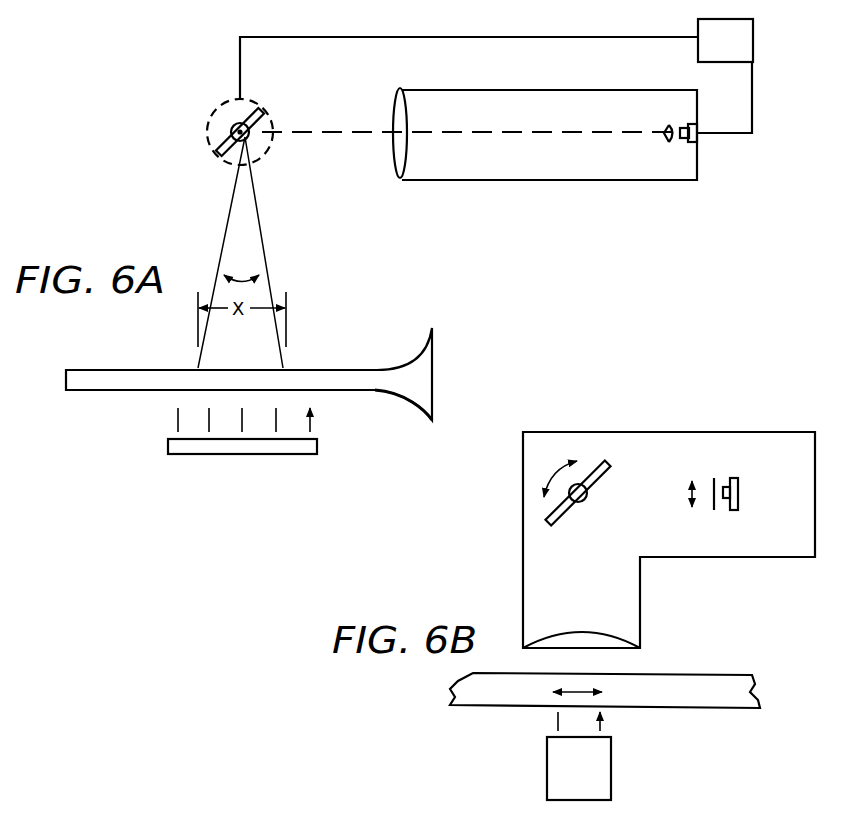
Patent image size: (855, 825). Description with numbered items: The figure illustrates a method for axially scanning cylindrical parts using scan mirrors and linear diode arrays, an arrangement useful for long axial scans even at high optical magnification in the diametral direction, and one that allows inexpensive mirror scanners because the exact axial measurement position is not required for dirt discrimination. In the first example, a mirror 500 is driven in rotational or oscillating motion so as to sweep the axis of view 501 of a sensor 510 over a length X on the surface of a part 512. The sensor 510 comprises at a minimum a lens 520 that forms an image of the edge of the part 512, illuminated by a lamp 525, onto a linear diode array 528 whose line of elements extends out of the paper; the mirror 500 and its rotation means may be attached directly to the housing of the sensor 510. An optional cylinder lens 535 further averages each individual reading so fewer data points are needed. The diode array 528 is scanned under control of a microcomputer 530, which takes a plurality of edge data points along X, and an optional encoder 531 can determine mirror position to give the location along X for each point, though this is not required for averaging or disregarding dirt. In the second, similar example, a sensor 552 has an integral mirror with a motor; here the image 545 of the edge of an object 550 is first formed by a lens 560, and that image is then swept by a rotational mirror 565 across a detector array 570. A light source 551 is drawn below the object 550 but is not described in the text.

In FIG. 6A, the mirror 500 is at (262, 109).
In FIG. 6A, the axis of view 501 is at (318, 130).
In FIG. 6A, the sensor 510 is at (518, 180).
In FIG. 6A, the part 512 is at (433, 373).
In FIG. 6A, the lens 520 is at (394, 145).
In FIG. 6A, the lamp 525 is at (318, 446).
In FIG. 6A, the linear diode array 528 is at (680, 141).
In FIG. 6A, the microcomputer 530 is at (748, 55).
In FIG. 6A, the encoder 531 is at (215, 112).
In FIG. 6A, the cylinder lens 535 is at (665, 127).
In FIG. 6B, the image 545 is at (706, 490).
In FIG. 6B, the object 550 is at (757, 690).
In FIG. 6B, the light source 551 is at (603, 776).
In FIG. 6B, the sensor 552 is at (523, 555).
In FIG. 6B, the lens 560 is at (590, 632).
In FIG. 6B, the rotational mirror 565 is at (596, 467).
In FIG. 6B, the detector array 570 is at (738, 492).